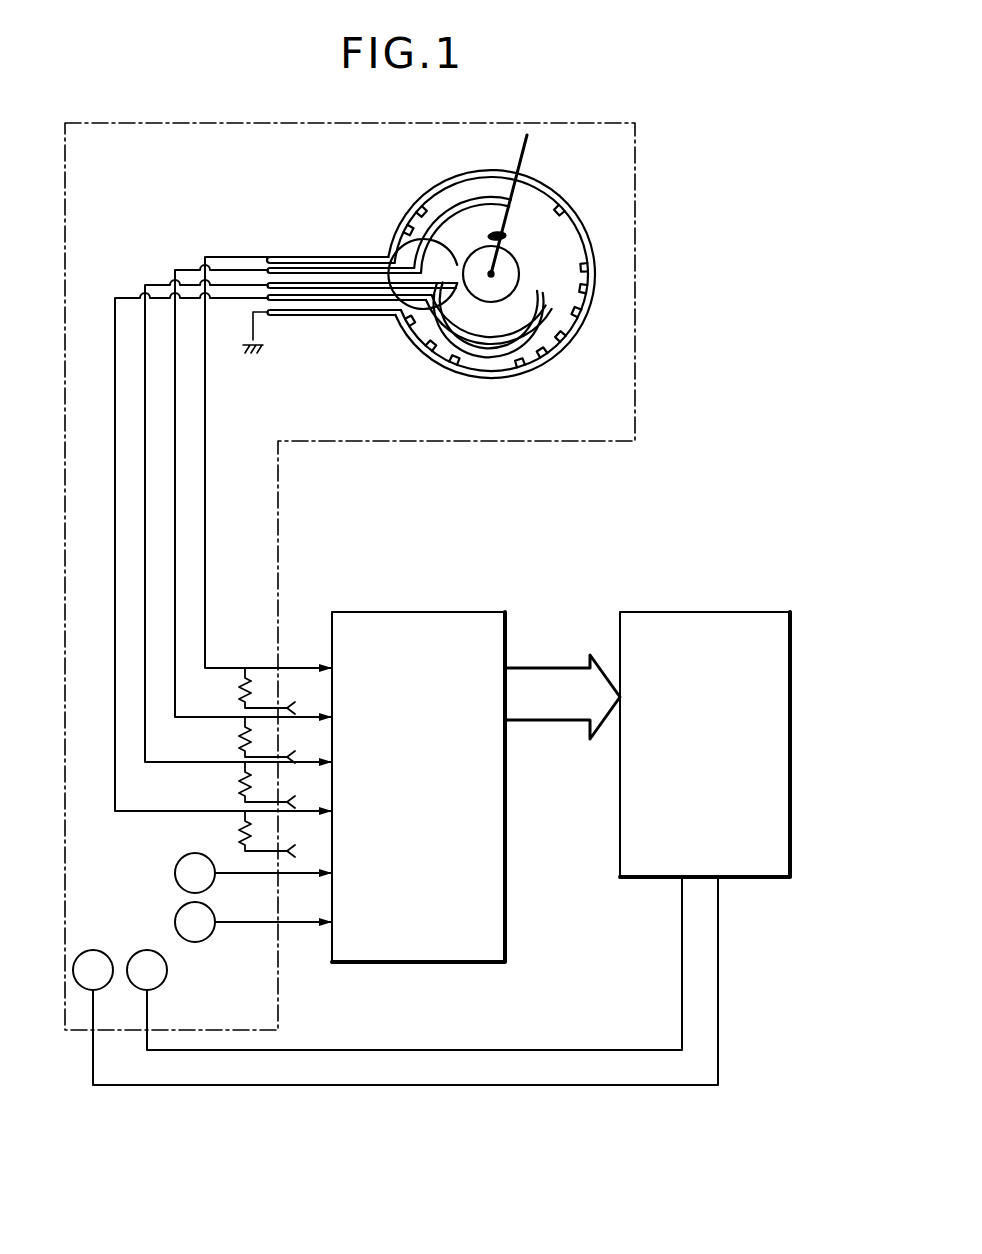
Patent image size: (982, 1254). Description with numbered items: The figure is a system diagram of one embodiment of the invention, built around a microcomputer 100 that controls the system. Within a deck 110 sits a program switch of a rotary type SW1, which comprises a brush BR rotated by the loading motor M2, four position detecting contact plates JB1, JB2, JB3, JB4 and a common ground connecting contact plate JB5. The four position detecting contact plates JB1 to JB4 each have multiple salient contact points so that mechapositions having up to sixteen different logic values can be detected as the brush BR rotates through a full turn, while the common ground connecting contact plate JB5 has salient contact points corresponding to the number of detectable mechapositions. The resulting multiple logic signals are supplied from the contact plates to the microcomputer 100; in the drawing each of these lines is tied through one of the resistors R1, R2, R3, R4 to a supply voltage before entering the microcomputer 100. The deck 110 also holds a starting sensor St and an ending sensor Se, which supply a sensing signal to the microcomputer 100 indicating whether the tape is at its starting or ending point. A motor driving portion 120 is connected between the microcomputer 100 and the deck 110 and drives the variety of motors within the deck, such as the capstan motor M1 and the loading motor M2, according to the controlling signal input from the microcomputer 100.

The deck 110 is at (635, 414).
The microcomputer 100 is at (407, 612).
The motor driving portion 120 is at (705, 612).
The program switch of a rotary type SW1 is at (402, 216).
The brush BR is at (522, 155).
The position detecting contact plate JB1 is at (283, 257).
The position detecting contact plate JB2 is at (345, 268).
The position detecting contact plate JB3 is at (300, 288).
The position detecting contact plate JB4 is at (370, 300).
The common ground connecting contact plate JB5 is at (460, 374).
The pull-up resistor 1 R1 is at (264, 691).
The pull-up resistor 2 R2 is at (264, 740).
The pull-up resistor 3 R3 is at (264, 785).
The pull-up resistor 4 R4 is at (264, 834).
The ending sensor Se is at (253, 873).
The starting sensor St is at (253, 922).
The capstan motor M1 is at (395, 981).
The loading motor M2 is at (404, 963).